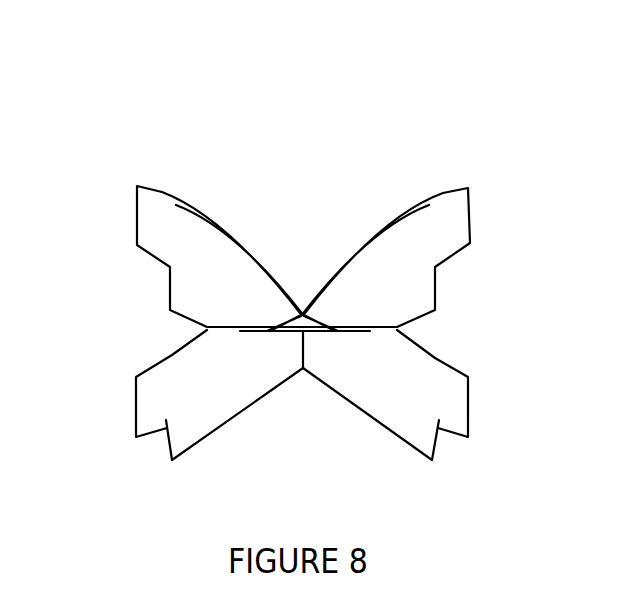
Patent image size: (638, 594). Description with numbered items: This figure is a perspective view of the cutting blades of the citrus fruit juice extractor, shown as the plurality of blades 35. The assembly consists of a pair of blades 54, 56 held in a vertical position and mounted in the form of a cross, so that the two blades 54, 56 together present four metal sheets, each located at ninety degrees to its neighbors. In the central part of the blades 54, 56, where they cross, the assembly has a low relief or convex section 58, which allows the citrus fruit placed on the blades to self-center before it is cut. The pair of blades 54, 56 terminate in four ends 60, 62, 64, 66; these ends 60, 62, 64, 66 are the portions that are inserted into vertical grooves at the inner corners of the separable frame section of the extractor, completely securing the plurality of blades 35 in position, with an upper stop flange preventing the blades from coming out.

The plurality of blades 35 is at (286, 252).
The blade 54 is at (216, 268).
The blade 56 is at (398, 257).
The low relief or convex section 58 is at (305, 279).
The end 60 is at (150, 400).
The end 62 is at (458, 222).
The end 64 is at (458, 400).
The end 66 is at (150, 222).